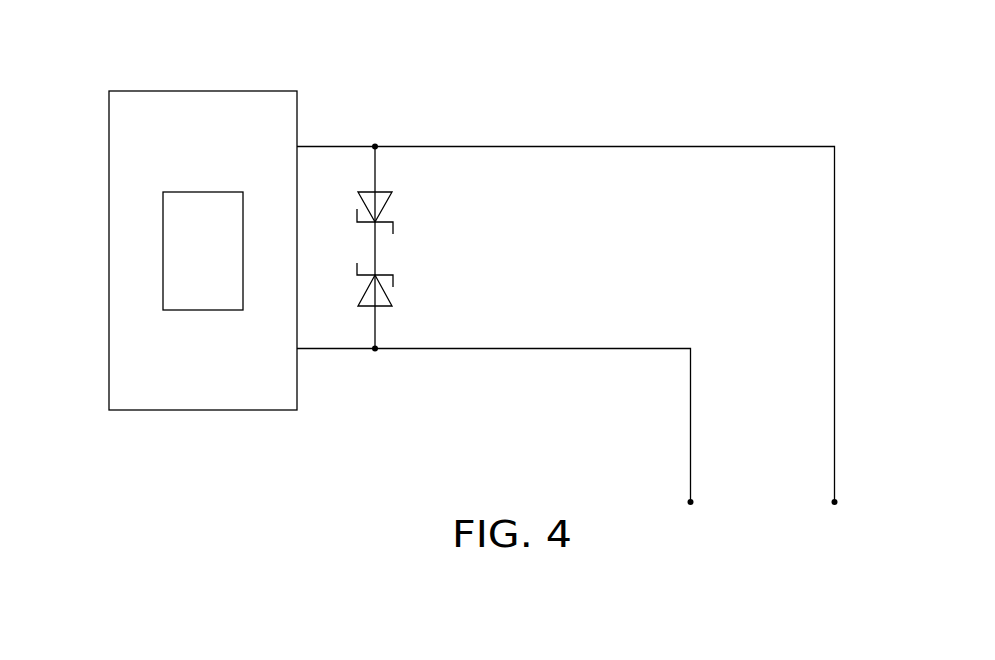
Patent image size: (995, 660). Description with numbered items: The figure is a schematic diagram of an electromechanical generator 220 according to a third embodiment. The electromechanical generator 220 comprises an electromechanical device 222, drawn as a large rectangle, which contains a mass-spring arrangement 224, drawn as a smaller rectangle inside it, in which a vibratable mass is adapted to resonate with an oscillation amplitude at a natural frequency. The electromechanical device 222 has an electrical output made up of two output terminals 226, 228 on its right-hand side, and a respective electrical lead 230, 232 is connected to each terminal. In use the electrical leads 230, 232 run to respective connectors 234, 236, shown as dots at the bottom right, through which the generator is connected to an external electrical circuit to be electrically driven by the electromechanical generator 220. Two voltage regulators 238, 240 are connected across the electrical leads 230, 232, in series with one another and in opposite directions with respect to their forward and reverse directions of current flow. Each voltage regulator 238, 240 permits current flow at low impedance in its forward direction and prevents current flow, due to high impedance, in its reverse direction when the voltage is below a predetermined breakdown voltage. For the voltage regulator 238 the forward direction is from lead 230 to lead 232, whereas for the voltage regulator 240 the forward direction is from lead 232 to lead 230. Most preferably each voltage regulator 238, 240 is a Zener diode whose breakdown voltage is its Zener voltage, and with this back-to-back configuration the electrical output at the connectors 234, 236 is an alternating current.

The electromechanical generator 220 is at (370, 427).
The electromechanical device 222 is at (235, 91).
The mass-spring arrangement 224 is at (216, 192).
The output terminal 226 is at (298, 146).
The output terminal 228 is at (299, 350).
The electrical lead 230 is at (411, 146).
The electrical lead 232 is at (406, 350).
The connector 234 is at (838, 502).
The connector 236 is at (687, 502).
The voltage regulator 238 is at (393, 192).
The voltage regulator 240 is at (393, 306).